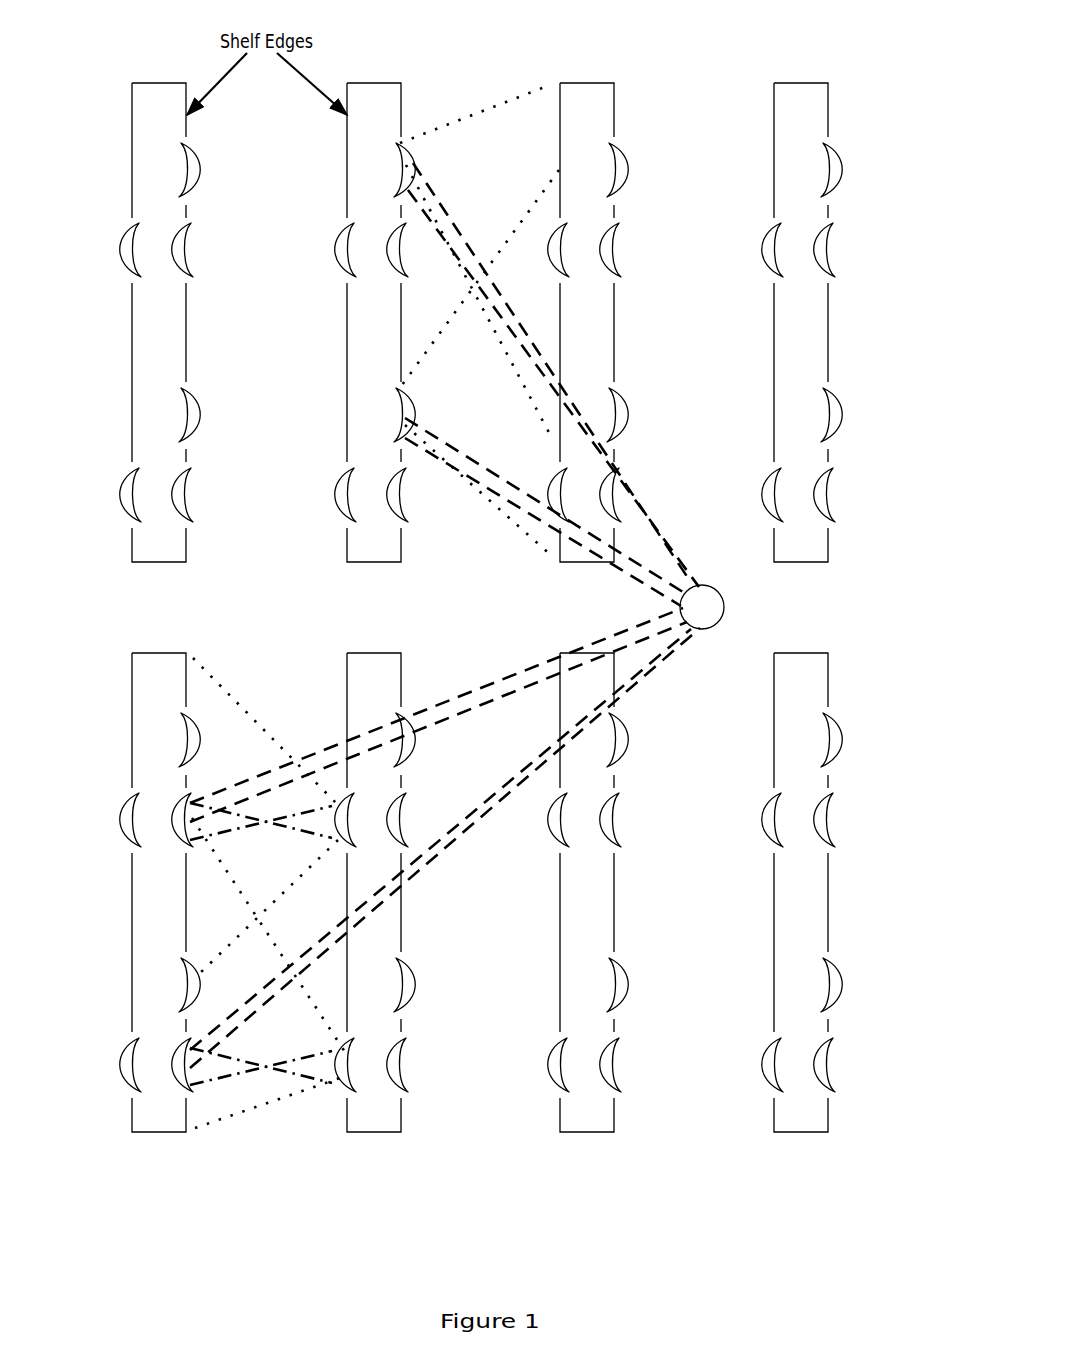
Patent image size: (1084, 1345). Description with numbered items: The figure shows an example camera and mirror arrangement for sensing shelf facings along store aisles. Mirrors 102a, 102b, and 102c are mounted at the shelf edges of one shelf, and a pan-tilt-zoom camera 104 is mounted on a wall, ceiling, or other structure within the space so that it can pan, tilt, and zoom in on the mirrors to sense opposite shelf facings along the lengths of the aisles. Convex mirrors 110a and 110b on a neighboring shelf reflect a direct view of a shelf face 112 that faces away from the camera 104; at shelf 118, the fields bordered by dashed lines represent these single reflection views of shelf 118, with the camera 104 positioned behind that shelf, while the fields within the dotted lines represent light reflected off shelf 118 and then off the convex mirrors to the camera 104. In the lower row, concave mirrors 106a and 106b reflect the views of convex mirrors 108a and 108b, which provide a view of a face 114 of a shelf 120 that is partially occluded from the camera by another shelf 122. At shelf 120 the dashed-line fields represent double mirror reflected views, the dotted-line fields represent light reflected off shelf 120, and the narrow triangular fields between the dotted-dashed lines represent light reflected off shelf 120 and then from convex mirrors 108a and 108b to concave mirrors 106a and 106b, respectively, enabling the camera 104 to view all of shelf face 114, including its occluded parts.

The mirror 102a is at (200, 170).
The mirror 102b is at (192, 263).
The mirror 102c is at (203, 417).
The pan-tilt-zoom camera 104 is at (724, 607).
The concave mirror 106a is at (178, 842).
The concave mirror 106b is at (178, 1082).
The convex mirror 108a is at (350, 832).
The convex mirror 108b is at (350, 1075).
The convex mirror 110a is at (404, 176).
The convex mirror 110b is at (404, 416).
The shelf face 112 is at (537, 165).
The shelf face 114 is at (211, 712).
The shelf 118 is at (610, 74).
The shelf 120 is at (177, 858).
The shelf 122 is at (397, 859).